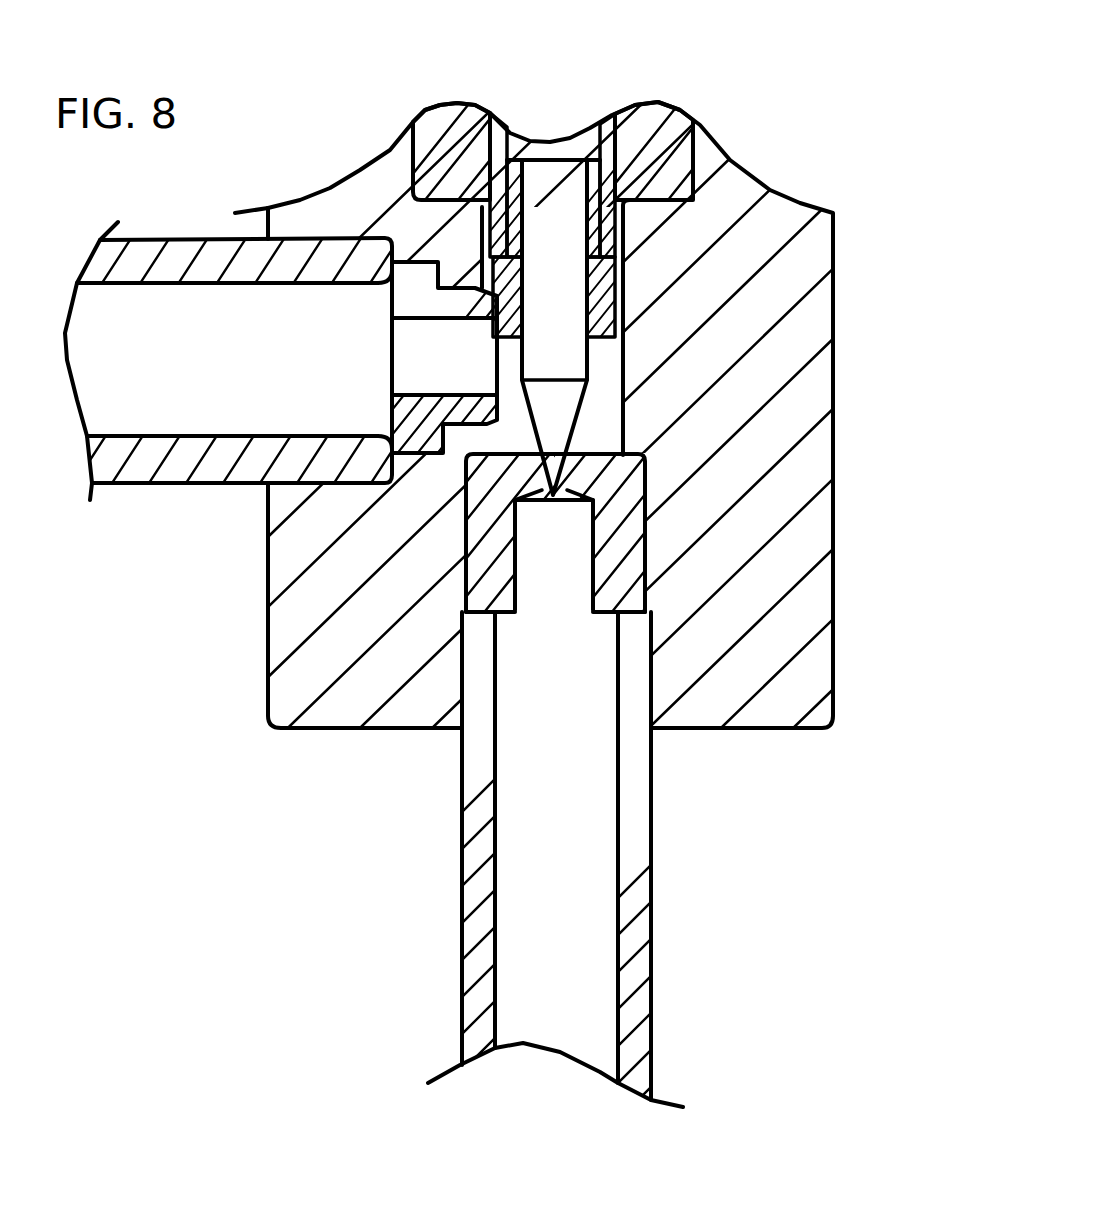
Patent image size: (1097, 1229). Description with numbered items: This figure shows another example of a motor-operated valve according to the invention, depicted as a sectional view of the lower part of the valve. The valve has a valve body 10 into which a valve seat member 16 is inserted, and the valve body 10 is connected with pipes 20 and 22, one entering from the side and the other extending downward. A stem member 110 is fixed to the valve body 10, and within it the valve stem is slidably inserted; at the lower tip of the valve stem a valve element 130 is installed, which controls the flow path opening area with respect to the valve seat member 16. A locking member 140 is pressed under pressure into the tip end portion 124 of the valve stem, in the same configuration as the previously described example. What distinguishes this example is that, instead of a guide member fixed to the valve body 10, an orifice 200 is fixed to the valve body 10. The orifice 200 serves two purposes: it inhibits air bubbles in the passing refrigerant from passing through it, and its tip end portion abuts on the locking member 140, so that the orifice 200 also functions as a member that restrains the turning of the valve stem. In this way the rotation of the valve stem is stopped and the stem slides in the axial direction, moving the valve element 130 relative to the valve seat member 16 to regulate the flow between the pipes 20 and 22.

The valve body 10 is at (817, 668).
The stem member 110 is at (633, 128).
The tip end portion of the valve stem 124 is at (612, 160).
The locking member 140 is at (603, 283).
The valve element 130 is at (563, 362).
The valve seat member 16 is at (627, 583).
The pipe 22 is at (480, 950).
The pipe 20 is at (152, 462).
The orifice 200 is at (416, 452).